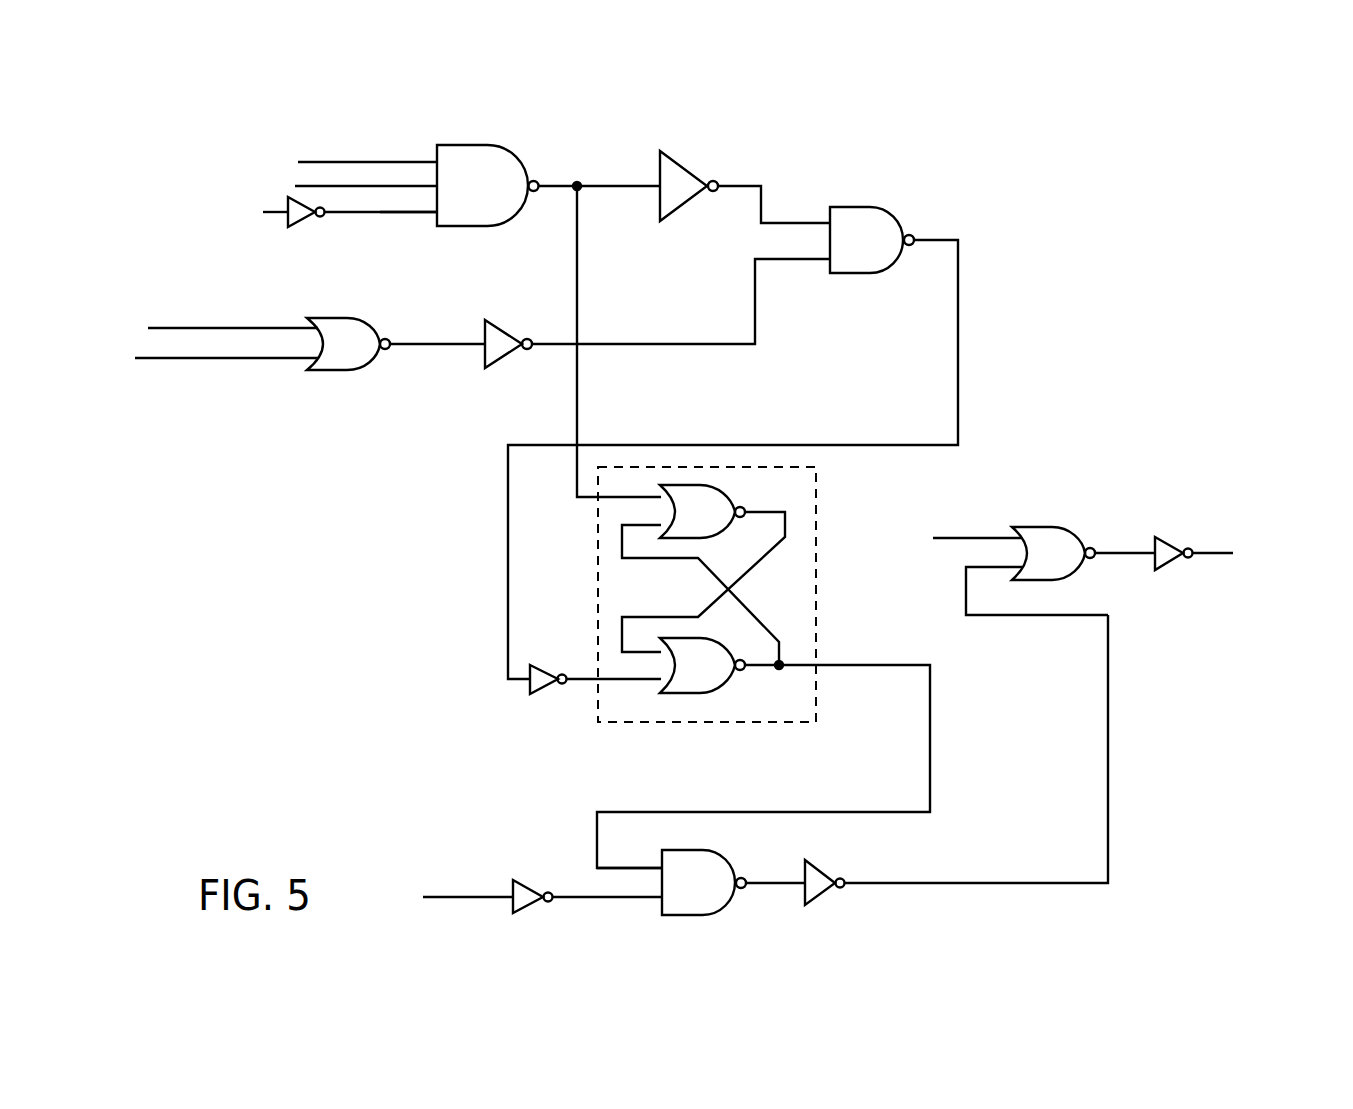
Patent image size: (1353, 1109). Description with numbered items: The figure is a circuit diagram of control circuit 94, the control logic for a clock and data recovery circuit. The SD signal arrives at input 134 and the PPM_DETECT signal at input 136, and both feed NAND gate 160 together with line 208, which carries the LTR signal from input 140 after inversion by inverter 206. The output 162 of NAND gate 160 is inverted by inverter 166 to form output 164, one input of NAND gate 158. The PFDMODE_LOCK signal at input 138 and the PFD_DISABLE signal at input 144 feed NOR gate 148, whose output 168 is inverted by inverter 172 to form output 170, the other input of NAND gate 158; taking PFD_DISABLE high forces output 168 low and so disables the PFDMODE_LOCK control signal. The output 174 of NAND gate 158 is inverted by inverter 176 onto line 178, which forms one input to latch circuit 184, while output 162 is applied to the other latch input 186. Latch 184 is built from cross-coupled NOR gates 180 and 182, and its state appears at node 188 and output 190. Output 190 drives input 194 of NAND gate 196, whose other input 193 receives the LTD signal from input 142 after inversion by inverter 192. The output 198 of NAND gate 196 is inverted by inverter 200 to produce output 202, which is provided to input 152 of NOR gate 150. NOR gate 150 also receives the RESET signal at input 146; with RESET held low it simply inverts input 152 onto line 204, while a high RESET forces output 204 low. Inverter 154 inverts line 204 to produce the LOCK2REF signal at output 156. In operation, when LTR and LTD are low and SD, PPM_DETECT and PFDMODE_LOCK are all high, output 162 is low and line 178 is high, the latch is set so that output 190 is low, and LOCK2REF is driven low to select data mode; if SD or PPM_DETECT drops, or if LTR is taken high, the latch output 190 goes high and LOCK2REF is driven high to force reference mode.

The control circuit 94 is at (1066, 180).
The input 134 is at (381, 162).
The input 136 is at (308, 184).
The input 138 is at (137, 329).
The input 140 is at (271, 216).
The input 142 is at (445, 900).
The input 144 is at (275, 361).
The input 146 is at (993, 537).
The NOR gate 148 is at (353, 318).
The NOR gate 150 is at (1053, 525).
The input 152 is at (975, 564).
The inverter 154 is at (1170, 562).
The output 156 is at (1220, 556).
The NAND gate 158 is at (873, 207).
The NAND gate 160 is at (481, 145).
The output 162 is at (558, 183).
The output 164 is at (748, 183).
The inverter 166 is at (689, 163).
The output 168 is at (418, 348).
The output 170 is at (551, 341).
The inverter 172 is at (492, 366).
The output 174 is at (958, 318).
The inverter 176 is at (547, 665).
The line 178 is at (572, 684).
The NOR gate 180 is at (702, 539).
The NOR gate 182 is at (702, 694).
The latch circuit 184 is at (816, 497).
The input 186 is at (586, 500).
The node 188 is at (782, 660).
The output 190 is at (845, 662).
The inverter 192 is at (530, 907).
The input 193 is at (637, 900).
The input 194 is at (628, 868).
The NAND gate 196 is at (695, 915).
The output 198 is at (767, 882).
The inverter 200 is at (822, 868).
The output 202 is at (898, 888).
The output 204 is at (1128, 558).
The inverter 206 is at (313, 221).
The line 208 is at (376, 214).